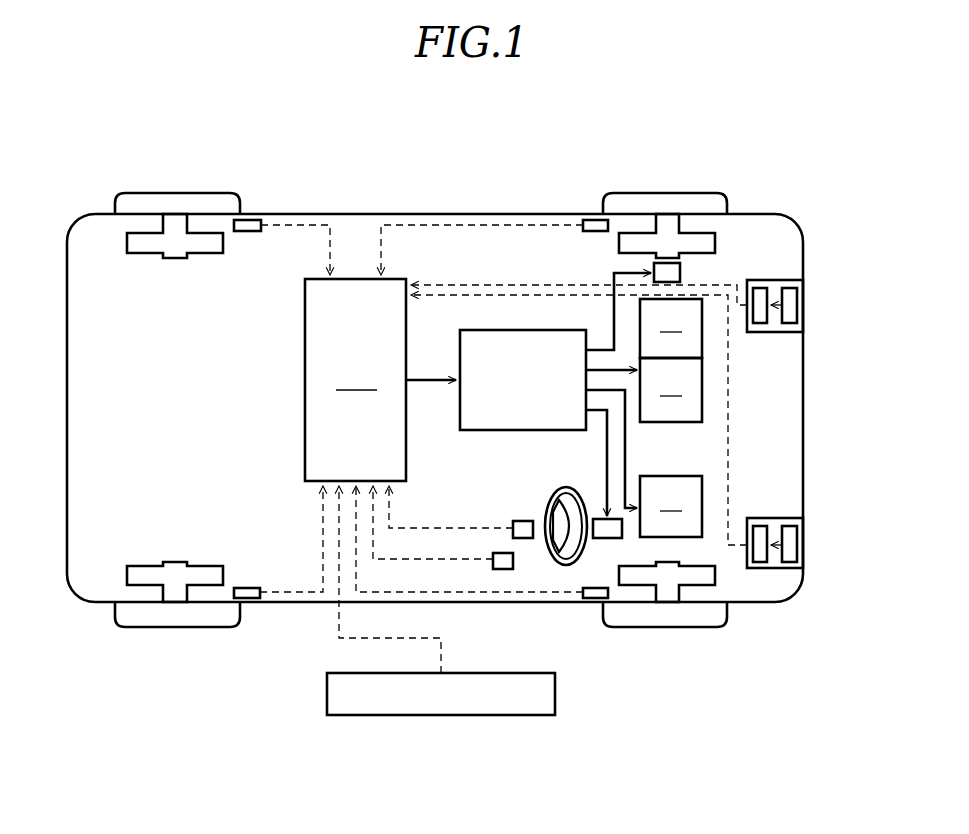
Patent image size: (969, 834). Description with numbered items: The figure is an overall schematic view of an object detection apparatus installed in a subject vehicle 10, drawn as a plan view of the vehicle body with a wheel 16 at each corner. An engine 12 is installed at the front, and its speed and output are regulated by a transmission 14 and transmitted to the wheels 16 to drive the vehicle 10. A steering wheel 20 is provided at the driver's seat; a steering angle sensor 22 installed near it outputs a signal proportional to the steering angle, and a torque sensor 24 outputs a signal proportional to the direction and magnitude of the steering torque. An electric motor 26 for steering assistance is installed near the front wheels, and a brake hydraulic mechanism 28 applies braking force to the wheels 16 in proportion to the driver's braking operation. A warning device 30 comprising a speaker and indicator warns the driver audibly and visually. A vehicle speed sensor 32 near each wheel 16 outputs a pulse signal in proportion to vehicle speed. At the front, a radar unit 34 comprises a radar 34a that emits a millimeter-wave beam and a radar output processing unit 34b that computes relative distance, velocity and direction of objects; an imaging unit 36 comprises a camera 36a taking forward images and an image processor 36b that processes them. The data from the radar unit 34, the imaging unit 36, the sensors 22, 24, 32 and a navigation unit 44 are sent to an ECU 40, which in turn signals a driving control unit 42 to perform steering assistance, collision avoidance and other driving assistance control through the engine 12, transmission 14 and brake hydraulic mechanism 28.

The vehicle 10 is at (768, 176).
The engine 12 is at (644, 390).
The transmission 14 is at (671, 329).
The wheels 16 is at (241, 206).
The steering wheel 20 is at (551, 495).
The steering angle sensor 22 is at (513, 559).
The torque sensor 24 is at (522, 520).
The electric motor 26 is at (681, 273).
The brake hydraulic mechanism 28 is at (644, 463).
The warning device 30 is at (614, 539).
The vehicle speed sensor 32 is at (249, 233).
The radar unit 34 is at (652, 290).
The radar 34a is at (791, 288).
The radar output processing unit 34b is at (768, 287).
The imaging unit 36 is at (652, 431).
The camera 36a is at (797, 530).
The image processor 36b is at (768, 526).
The ECU 40 is at (305, 312).
The driving control unit 42 is at (559, 330).
The navigation unit 44 is at (540, 672).